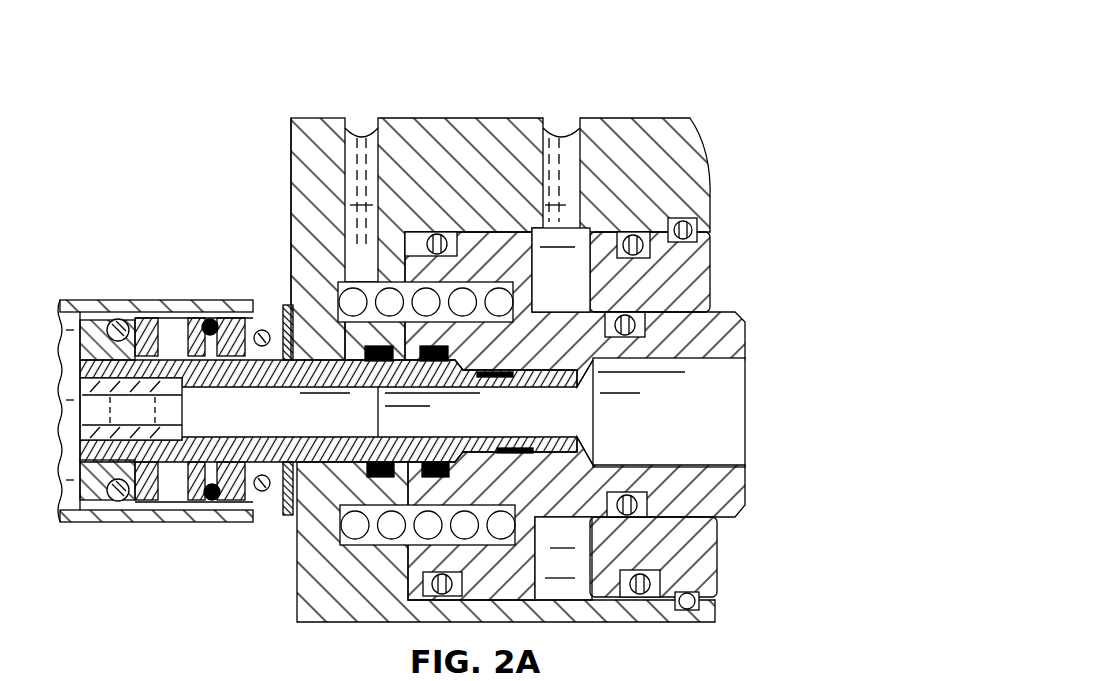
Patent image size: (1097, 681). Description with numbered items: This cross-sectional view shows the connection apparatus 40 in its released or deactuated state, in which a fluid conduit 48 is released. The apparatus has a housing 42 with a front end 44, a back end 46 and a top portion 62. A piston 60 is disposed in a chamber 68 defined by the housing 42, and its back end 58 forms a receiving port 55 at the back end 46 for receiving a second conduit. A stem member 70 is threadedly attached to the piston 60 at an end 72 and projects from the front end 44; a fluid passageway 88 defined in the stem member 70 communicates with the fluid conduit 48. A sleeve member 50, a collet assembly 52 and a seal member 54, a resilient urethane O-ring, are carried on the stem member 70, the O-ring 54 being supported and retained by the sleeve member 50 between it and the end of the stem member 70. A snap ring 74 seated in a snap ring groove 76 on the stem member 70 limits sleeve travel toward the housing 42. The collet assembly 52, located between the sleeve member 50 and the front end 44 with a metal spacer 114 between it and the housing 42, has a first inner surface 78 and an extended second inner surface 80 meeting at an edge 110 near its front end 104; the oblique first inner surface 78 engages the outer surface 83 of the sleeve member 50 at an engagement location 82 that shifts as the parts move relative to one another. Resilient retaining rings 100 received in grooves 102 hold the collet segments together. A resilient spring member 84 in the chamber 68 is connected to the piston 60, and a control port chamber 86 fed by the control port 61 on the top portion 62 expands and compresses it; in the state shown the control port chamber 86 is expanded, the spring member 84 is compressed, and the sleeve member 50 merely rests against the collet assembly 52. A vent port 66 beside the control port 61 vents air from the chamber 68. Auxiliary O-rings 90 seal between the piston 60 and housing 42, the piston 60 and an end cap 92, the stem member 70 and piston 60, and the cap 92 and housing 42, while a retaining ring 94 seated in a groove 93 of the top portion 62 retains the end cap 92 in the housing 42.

The connection apparatus 40 is at (766, 86).
The housing 42 is at (666, 110).
The front end 44 is at (298, 572).
The back end 46 is at (697, 247).
The fluid conduit 48 is at (70, 300).
The sleeve member 50 is at (140, 313).
The collet assembly 52 is at (223, 330).
The seal member 54 is at (113, 322).
The receiving port 55 is at (738, 359).
The back end of piston 58 is at (737, 320).
The piston 60 is at (697, 493).
The control port 61 is at (562, 172).
The top portion 62 is at (479, 117).
The vent port 66 is at (365, 172).
The chamber 68 is at (407, 130).
The stem member 70 is at (93, 345).
The end of stem member 72 is at (527, 355).
The snap ring 74 is at (190, 463).
The snap ring groove 76 is at (163, 467).
The first inner surface 78 is at (205, 345).
The second inner surface 80 is at (283, 487).
The engagement location 82 is at (173, 383).
The outer surface 83 is at (172, 505).
The spring member 84 is at (292, 248).
The control port chamber 86 is at (542, 279).
The fluid passageway 88 is at (97, 412).
The auxiliary O-rings 90 is at (437, 235).
The end cap 92 is at (698, 280).
The groove 93 is at (612, 305).
The retaining ring 94 is at (690, 232).
The resilient retaining rings 100 is at (270, 333).
The grooves 102 is at (220, 330).
The front end of collet assembly 104 is at (205, 500).
The edge 110 is at (243, 363).
The spacer 114 is at (288, 525).